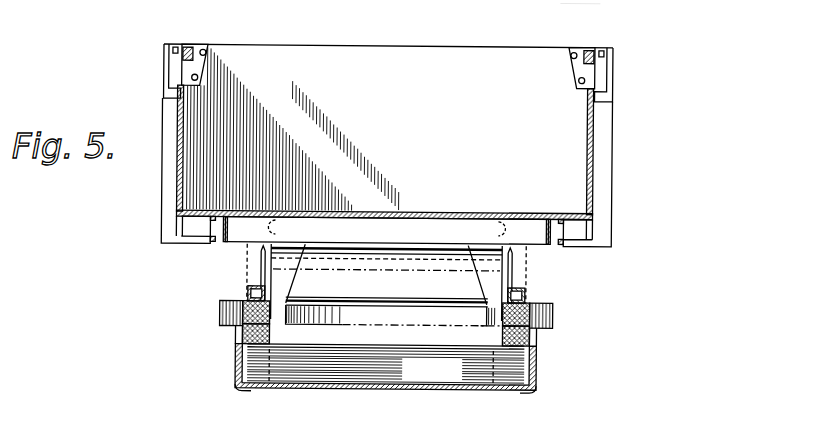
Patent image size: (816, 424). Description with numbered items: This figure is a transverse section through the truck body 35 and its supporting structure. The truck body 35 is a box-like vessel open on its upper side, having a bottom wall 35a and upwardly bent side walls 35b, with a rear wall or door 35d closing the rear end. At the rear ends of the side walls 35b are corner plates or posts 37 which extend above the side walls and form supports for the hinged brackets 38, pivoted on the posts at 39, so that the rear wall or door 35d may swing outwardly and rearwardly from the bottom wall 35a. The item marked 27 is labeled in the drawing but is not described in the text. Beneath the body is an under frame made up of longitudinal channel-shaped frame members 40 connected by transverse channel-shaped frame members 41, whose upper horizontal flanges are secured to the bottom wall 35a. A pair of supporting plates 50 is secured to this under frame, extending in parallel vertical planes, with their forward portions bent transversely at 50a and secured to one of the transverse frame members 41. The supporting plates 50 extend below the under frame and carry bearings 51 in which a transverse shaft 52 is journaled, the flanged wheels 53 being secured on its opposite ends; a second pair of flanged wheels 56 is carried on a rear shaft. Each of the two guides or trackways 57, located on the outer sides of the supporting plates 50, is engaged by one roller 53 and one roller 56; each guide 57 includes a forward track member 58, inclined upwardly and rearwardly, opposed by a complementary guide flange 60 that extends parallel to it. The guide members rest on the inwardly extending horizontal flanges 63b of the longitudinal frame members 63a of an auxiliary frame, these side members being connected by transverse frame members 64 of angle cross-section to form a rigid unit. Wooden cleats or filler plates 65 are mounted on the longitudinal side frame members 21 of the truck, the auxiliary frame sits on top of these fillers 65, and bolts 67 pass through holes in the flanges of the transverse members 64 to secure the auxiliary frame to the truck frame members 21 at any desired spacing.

The longitudinal side frame member 21 is at (240, 369).
The cabinet hood 27 is at (580, 8).
The truck body 35 is at (620, 53).
The bottom wall 35a is at (418, 212).
The side wall 35b is at (178, 118).
The rear wall or door 35d is at (437, 70).
The corner plate or post 37 is at (164, 63).
The hinged bracket 38 is at (192, 46).
The pivot 39 is at (205, 48).
The longitudinal channel-shaped frame member 40 is at (200, 227).
The transverse channel-shaped frame member 41 is at (386, 230).
The supporting plate 50 is at (285, 264).
The transversely bent forward portion 50a is at (292, 252).
The bearing 51 is at (290, 322).
The transverse shaft 52 is at (411, 299).
The flanged wheel 53 is at (257, 288).
The flanged wheel 56 is at (500, 227).
The guide or trackway 57 is at (247, 267).
The forward track member 58 is at (224, 309).
The guide flange 60 is at (246, 272).
The longitudinal frame member 63a is at (226, 316).
The inwardly extending horizontal flange 63b is at (243, 347).
The transverse frame member 64 is at (401, 319).
The wooden cleat or filler plate 65 is at (483, 346).
The bolt 67 is at (245, 388).